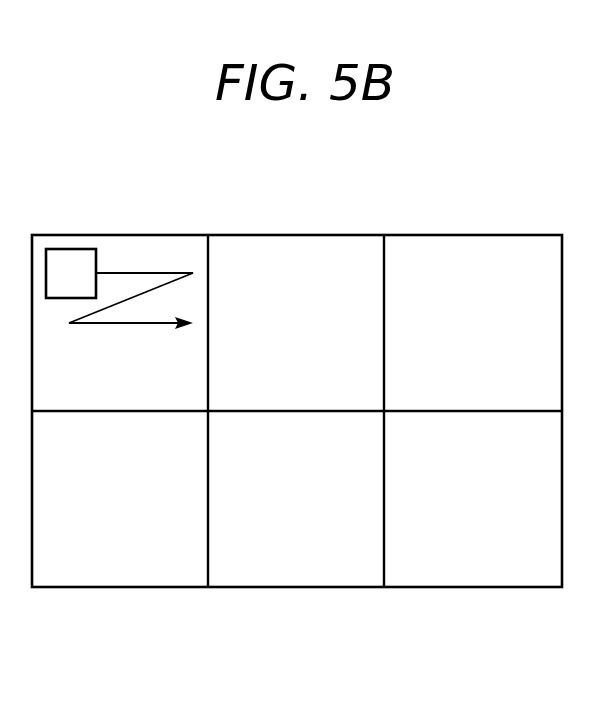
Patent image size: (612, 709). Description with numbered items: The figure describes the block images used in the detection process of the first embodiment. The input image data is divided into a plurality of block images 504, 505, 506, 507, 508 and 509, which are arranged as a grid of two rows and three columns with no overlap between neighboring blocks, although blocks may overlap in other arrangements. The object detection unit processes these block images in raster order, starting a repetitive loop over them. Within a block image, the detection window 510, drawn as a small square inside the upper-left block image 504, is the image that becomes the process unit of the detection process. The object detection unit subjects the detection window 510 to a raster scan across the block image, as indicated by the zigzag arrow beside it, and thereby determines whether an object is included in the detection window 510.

The block image 504 is at (108, 235).
The block image 505 is at (301, 235).
The block image 506 is at (477, 235).
The block image 507 is at (98, 588).
The block image 508 is at (296, 588).
The block image 509 is at (457, 588).
The detection window 510 is at (65, 298).